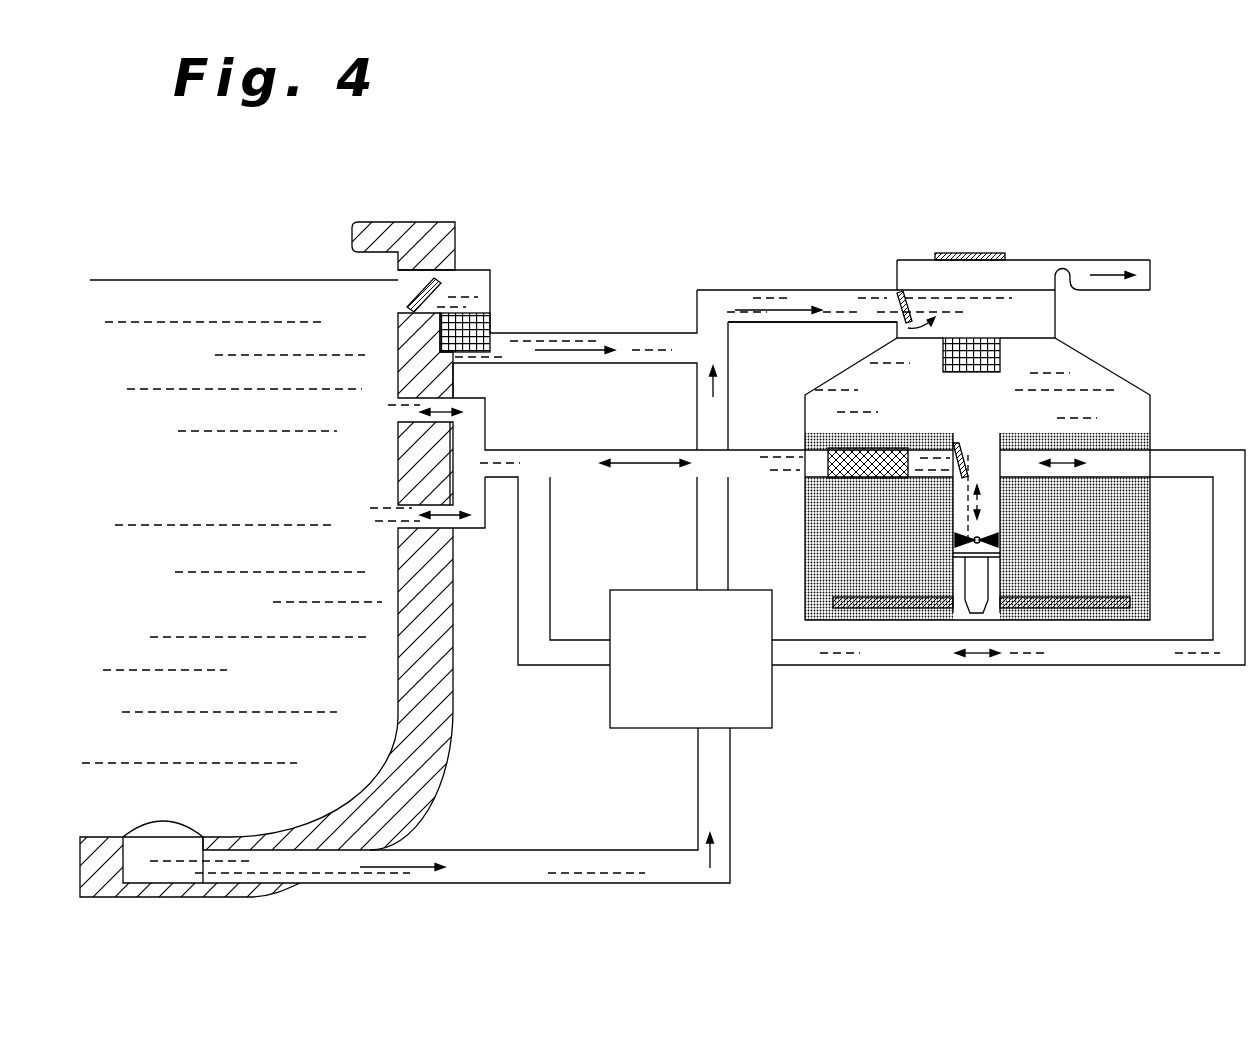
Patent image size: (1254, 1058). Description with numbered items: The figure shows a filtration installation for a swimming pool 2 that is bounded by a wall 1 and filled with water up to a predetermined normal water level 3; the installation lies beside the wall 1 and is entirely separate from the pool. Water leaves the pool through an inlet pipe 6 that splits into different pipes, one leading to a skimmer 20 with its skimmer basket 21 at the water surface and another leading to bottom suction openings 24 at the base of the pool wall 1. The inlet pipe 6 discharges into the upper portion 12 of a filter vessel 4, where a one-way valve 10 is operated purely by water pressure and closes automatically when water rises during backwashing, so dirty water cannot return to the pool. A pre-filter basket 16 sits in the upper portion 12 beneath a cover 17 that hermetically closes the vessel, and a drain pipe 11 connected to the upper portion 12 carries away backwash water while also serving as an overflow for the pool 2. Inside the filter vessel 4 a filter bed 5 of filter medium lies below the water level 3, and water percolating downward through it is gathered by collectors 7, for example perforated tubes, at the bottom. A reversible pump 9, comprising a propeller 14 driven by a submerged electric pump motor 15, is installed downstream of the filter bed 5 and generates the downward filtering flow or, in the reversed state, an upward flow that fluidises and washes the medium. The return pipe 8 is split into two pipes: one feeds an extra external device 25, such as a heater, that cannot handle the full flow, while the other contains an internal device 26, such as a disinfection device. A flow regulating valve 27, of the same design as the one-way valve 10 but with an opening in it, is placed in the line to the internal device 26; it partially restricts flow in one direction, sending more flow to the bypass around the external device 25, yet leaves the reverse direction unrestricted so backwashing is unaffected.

The wall 1 is at (430, 737).
The swimming pool 2 is at (222, 492).
The water level 3 is at (228, 280).
The filter vessel 4 is at (1148, 388).
The filter bed 5 is at (1128, 530).
The inlet pipe 6 is at (760, 290).
The collectors 7 is at (1055, 609).
The return pipe 8 is at (612, 450).
The pump 9 is at (960, 596).
The one-way valve 10 is at (906, 294).
The drain pipe 11 is at (1130, 260).
The upper portion 12 is at (1057, 308).
The propeller 14 is at (999, 540).
The electric pump motor 15 is at (978, 584).
The pre-filter basket 16 is at (985, 338).
The cover 17 is at (967, 253).
The skimmer 20 is at (420, 298).
The skimmer basket 21 is at (483, 327).
The bottom suction openings 24 is at (157, 852).
The external device 25 is at (752, 700).
The internal device 26 is at (827, 472).
The flow regulating valve 27 is at (965, 443).